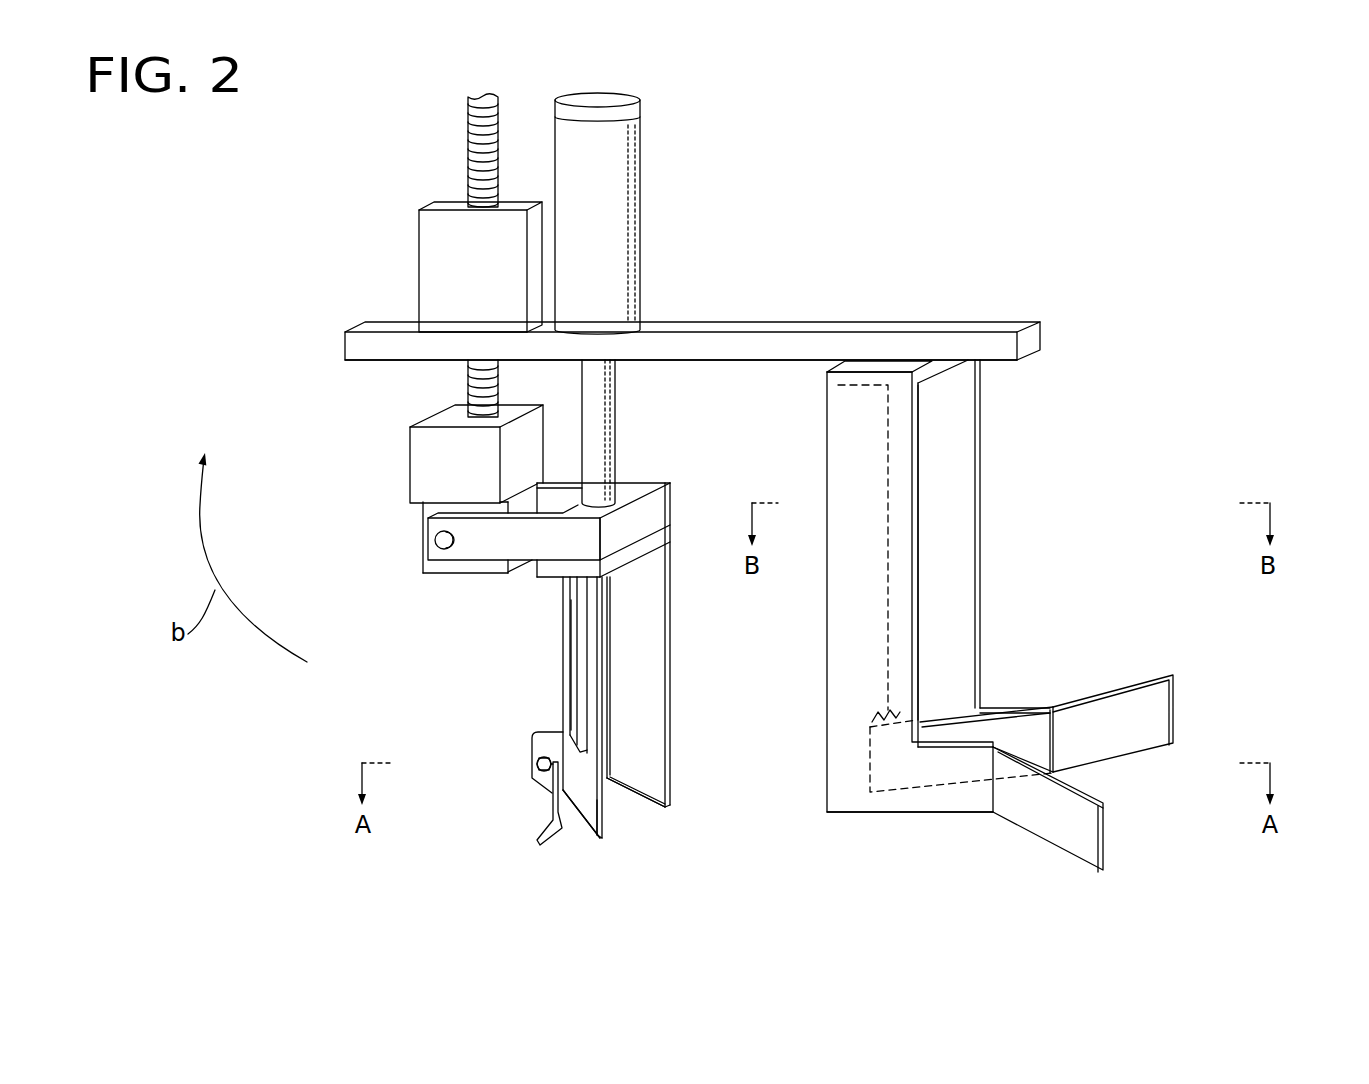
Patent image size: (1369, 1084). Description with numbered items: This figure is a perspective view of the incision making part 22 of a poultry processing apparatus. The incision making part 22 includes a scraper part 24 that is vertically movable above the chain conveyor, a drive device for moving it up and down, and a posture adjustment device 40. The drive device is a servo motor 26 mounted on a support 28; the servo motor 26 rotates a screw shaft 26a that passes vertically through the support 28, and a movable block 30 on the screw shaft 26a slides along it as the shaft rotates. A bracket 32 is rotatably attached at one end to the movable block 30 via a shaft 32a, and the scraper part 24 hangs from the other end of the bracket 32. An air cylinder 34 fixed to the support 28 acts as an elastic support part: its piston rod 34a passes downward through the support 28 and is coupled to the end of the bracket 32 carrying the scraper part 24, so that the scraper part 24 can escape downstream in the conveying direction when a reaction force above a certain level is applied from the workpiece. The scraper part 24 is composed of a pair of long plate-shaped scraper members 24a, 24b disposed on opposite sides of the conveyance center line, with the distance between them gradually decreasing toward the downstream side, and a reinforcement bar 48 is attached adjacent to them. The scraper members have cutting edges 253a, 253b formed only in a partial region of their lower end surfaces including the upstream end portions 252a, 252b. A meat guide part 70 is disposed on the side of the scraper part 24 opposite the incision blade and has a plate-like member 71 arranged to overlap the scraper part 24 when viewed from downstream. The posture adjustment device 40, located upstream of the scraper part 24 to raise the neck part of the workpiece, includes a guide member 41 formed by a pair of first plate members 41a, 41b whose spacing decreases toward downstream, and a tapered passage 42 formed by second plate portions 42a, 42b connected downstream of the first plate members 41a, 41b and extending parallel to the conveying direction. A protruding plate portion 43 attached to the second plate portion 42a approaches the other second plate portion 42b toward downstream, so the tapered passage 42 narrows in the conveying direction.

The incision making part 22 is at (1114, 159).
The scraper part 24 is at (460, 639).
The scraper member 24a is at (655, 632).
The scraper member 24b is at (593, 683).
The servo motor 26 is at (440, 263).
The screw shaft 26a is at (477, 388).
The support 28 is at (727, 330).
The movable block 30 is at (443, 472).
The bracket 32 is at (493, 545).
The shaft 32a is at (433, 541).
The air cylinder 34 is at (605, 155).
The piston rod 34a is at (593, 412).
The posture adjustment device 40 is at (1035, 438).
The guide member 41 is at (1150, 808).
The first plate member 41a is at (1157, 717).
The first plate member 41b is at (1087, 850).
The tapered passage 42 is at (1032, 750).
The second plate portion 42a is at (1000, 703).
The second plate portion 42b is at (930, 802).
The protruding plate portion 43 is at (1028, 730).
The reinforcement bar 48 is at (575, 636).
The meat guide part 70 is at (511, 812).
The plate-like member 71 is at (540, 822).
The end portion 252a is at (665, 808).
The end portion 252b is at (603, 840).
The cutting edge 253a is at (661, 808).
The cutting edge 253b is at (598, 841).